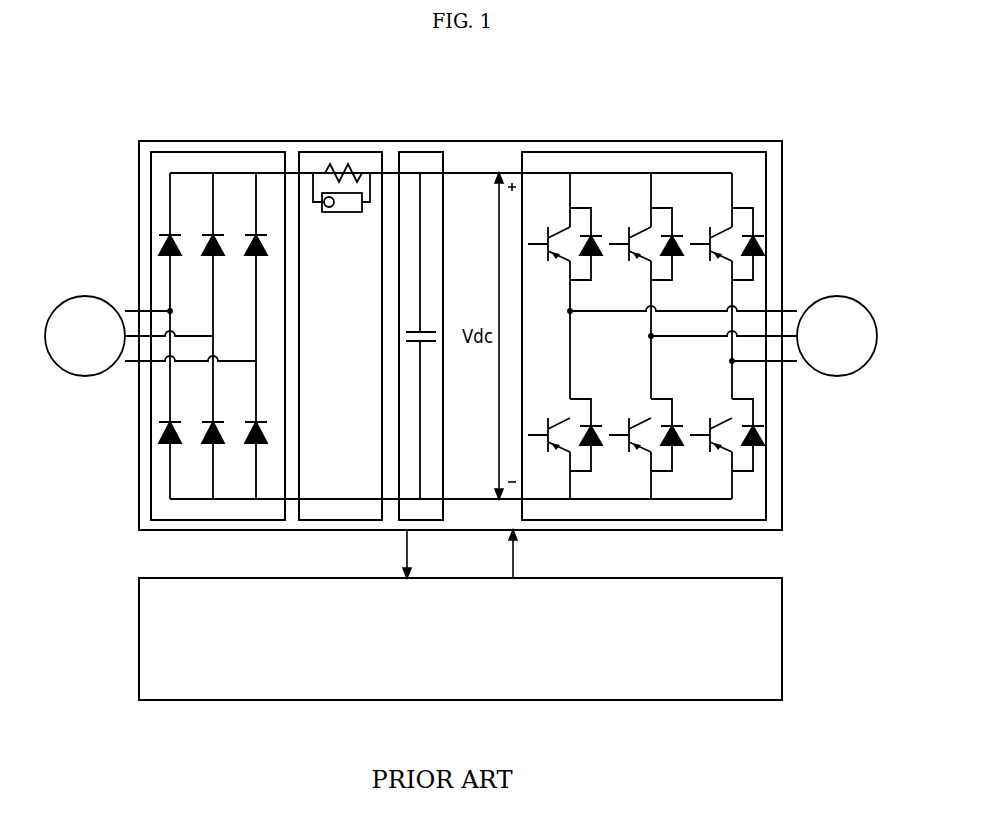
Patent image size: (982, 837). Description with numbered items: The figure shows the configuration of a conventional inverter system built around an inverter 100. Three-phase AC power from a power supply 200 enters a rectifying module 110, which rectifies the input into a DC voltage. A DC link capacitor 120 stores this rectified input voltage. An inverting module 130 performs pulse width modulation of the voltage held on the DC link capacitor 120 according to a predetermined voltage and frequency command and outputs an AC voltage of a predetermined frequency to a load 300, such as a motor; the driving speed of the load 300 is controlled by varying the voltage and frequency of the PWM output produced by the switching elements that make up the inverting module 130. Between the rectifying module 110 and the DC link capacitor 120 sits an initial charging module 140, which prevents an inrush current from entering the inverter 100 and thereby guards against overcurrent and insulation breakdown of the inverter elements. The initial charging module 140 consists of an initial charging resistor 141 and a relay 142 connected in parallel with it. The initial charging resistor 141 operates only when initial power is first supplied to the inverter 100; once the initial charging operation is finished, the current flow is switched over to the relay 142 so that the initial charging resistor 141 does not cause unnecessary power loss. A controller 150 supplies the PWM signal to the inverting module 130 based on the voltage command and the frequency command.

The inverter 100 is at (722, 140).
The rectifying module 110 is at (216, 150).
The DC link capacitor 120 is at (418, 150).
The inverting module 130 is at (642, 150).
The initial charging module 140 is at (369, 150).
The initial charging resistor 141 is at (326, 166).
The relay 142 is at (343, 215).
The controller 150 is at (783, 636).
The power supply 200 is at (85, 296).
The load 300 is at (836, 295).